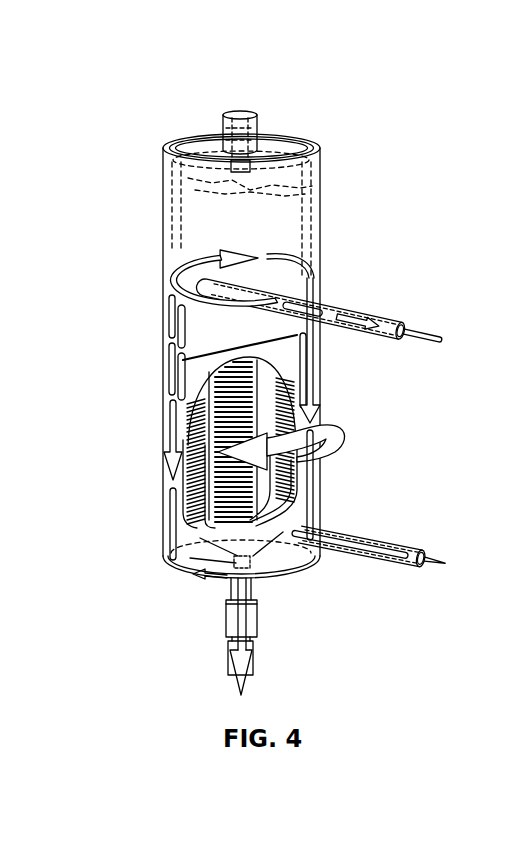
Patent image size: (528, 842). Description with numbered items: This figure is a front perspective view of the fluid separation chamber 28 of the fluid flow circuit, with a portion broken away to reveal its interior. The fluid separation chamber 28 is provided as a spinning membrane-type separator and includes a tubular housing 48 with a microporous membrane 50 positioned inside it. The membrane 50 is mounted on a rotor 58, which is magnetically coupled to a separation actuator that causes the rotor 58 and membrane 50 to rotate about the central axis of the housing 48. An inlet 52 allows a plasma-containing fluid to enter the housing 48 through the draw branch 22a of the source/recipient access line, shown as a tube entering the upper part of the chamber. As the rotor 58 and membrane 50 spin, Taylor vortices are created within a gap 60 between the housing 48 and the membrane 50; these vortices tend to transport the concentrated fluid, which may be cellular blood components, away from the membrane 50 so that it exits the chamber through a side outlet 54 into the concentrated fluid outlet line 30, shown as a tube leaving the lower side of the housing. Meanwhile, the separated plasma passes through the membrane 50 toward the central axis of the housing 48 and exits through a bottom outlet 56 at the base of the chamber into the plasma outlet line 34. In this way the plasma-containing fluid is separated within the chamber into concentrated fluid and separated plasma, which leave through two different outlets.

The fluid separation chamber 28 is at (270, 394).
The tubular housing 48 is at (172, 205).
The rotor 58 is at (317, 192).
The gap 60 is at (320, 208).
The draw branch 22a is at (330, 302).
The inlet 52 is at (235, 325).
The microporous membrane 50 is at (193, 395).
The side outlet 54 is at (352, 535).
The concentrated fluid outlet line 30 is at (369, 576).
The bottom outlet 56 is at (230, 621).
The plasma outlet line 34 is at (258, 662).